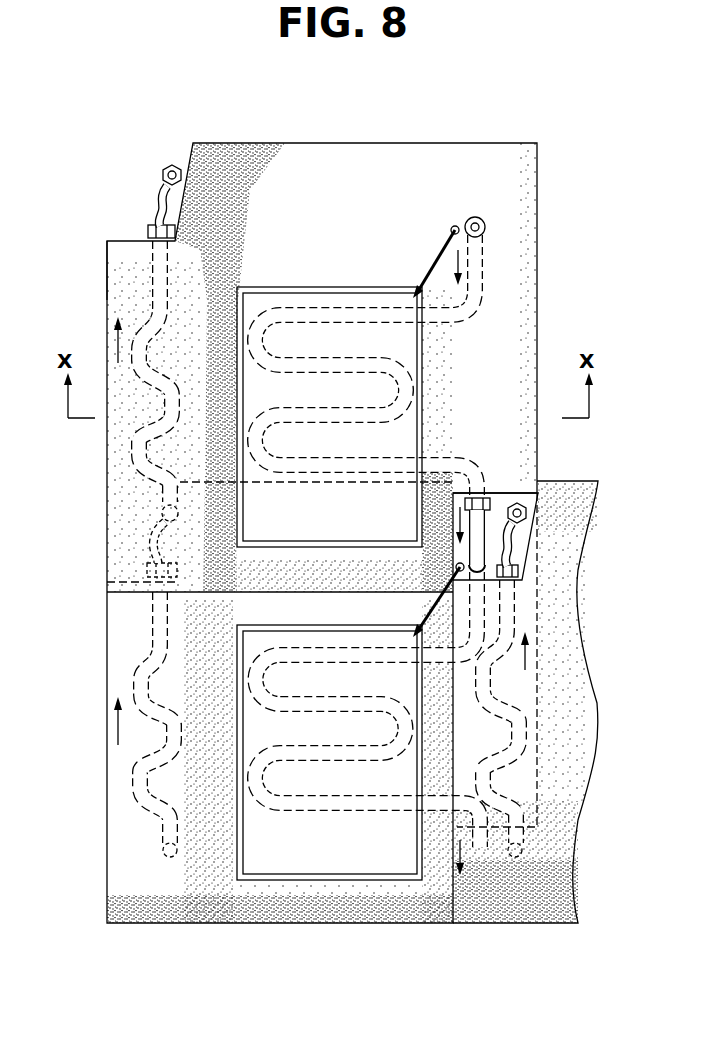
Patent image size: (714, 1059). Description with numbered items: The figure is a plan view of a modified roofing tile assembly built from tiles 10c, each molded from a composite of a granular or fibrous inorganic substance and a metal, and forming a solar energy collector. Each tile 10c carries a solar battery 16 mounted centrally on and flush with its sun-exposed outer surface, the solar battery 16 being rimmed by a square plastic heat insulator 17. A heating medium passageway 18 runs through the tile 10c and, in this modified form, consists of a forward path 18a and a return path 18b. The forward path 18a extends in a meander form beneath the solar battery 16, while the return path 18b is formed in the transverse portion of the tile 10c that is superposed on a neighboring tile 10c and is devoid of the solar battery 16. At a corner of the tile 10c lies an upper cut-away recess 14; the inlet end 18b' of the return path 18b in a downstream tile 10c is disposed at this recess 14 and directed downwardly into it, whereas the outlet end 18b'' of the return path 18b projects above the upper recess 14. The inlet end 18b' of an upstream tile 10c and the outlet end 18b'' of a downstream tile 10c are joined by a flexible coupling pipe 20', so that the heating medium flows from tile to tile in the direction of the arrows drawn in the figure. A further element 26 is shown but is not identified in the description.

The tile 10c is at (462, 138).
The upper cut-away recess 14 is at (110, 239).
The solar battery 16 is at (403, 442).
The heat insulator 17 is at (417, 418).
The heating medium passageway 18 is at (489, 267).
The forward path 18a is at (487, 310).
The return path 18b is at (109, 371).
The inlet end 18b' is at (347, 723).
The outlet end 18b'' is at (359, 404).
The flexible coupling pipe 20' is at (348, 361).
The connecting rod 26 is at (448, 238).